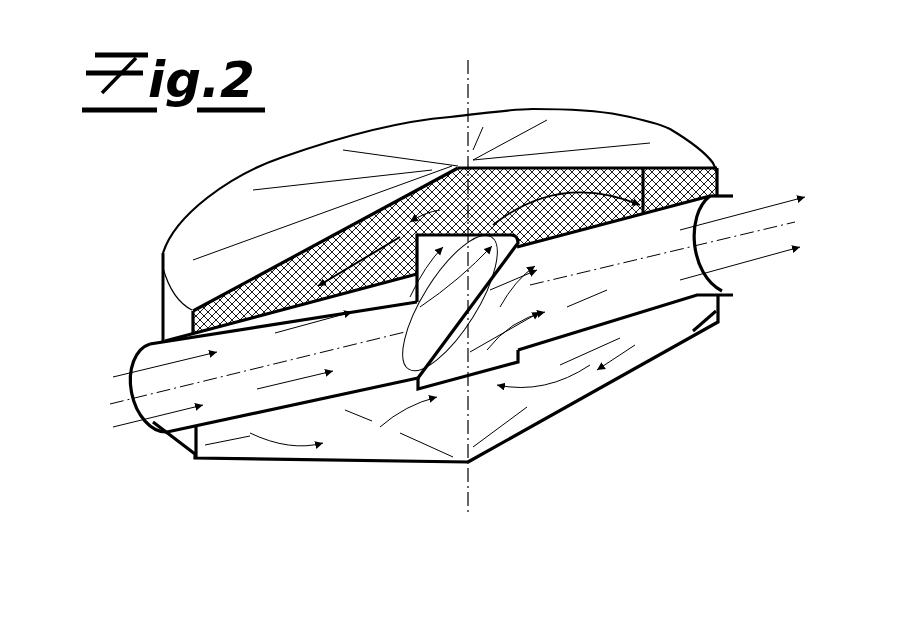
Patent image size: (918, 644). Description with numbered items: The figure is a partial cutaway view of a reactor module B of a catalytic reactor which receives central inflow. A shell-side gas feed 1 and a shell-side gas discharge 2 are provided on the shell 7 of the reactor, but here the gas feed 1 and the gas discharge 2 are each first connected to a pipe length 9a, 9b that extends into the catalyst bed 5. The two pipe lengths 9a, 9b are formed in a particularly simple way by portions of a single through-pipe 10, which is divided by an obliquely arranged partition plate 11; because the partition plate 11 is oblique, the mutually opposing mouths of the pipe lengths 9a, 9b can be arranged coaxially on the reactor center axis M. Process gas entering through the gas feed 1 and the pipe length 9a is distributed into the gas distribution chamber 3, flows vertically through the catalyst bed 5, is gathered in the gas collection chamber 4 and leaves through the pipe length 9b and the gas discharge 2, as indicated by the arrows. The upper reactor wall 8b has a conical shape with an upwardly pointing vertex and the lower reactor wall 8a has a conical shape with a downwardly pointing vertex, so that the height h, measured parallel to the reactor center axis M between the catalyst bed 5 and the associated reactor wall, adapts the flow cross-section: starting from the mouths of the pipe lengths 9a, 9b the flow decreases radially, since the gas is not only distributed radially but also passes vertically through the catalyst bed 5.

The shell-side gas feed 1 is at (153, 346).
The shell-side gas discharge 2 is at (718, 286).
The gas distribution chamber 3 is at (430, 178).
The gas collection chamber 4 is at (372, 456).
The catalyst bed 5 is at (237, 292).
The shell 7 is at (190, 443).
The lower reactor wall 8a is at (653, 358).
The upper reactor wall 8b is at (593, 168).
The pipe length 9a is at (285, 412).
The pipe length 9b is at (655, 300).
The through-pipe 10 is at (237, 425).
The partition plate 11 is at (437, 362).
The reactor center axis M is at (472, 96).
The module which receives central inflow B is at (730, 93).
The height h is at (670, 172).